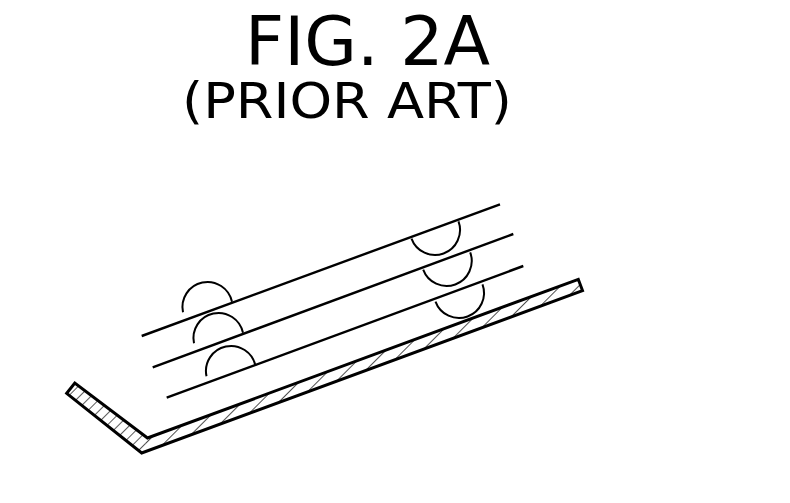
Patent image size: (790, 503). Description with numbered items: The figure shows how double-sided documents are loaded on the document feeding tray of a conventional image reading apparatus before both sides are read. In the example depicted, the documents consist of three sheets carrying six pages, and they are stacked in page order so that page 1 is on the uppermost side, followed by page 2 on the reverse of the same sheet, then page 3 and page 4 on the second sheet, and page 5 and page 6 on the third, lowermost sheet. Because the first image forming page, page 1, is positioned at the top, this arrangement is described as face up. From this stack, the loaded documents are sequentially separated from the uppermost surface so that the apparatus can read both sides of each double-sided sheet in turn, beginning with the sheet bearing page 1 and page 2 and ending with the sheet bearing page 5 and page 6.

The page one 1 is at (207, 297).
The page two 2 is at (582, 282).
The page three 3 is at (523, 189).
The page four 4 is at (447, 270).
The page five 5 is at (231, 361).
The page six 6 is at (460, 301).